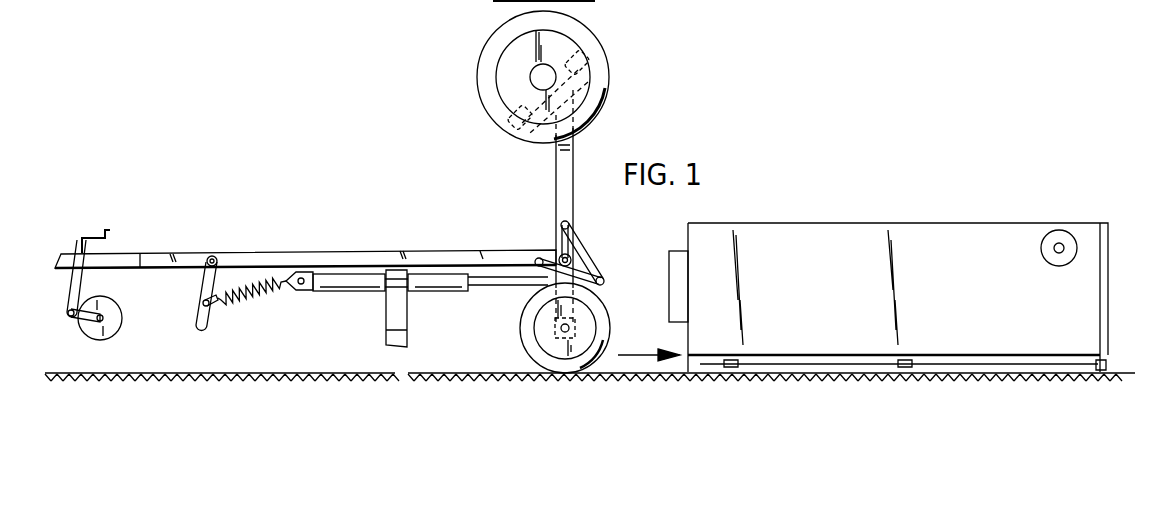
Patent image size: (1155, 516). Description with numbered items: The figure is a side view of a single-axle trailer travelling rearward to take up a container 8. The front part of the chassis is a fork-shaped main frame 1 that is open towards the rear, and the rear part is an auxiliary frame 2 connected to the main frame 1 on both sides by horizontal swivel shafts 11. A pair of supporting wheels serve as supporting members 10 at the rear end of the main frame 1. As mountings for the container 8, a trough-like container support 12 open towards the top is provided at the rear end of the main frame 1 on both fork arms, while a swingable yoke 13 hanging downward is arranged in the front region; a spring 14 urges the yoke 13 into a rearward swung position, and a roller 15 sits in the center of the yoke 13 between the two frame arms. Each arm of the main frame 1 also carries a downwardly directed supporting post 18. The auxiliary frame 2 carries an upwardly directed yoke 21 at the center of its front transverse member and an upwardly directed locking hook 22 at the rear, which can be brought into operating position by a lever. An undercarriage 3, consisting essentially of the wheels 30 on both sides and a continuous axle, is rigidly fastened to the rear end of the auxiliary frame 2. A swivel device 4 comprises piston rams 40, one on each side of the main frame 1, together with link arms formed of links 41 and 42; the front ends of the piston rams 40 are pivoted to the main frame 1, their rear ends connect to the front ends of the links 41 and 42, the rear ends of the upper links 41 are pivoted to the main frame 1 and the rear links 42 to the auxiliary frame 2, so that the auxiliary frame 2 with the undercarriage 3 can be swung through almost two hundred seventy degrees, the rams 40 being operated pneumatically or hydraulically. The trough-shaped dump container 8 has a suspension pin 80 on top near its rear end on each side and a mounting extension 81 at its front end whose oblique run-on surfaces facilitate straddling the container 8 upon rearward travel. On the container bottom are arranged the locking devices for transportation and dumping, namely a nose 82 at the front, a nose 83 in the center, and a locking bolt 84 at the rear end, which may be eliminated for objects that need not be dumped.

The main frame 1 is at (315, 253).
The auxiliary frame 2 is at (575, 147).
The undercarriage 3 is at (472, 75).
The swivel device 4 is at (462, 266).
The container 8 is at (832, 232).
The supporting members 10 is at (521, 343).
The horizontal swivel shafts 11 is at (571, 255).
The container support 12 is at (560, 226).
The swingable yoke 13 is at (205, 283).
The spring 14 is at (256, 292).
The roller 15 is at (218, 310).
The supporting post 18 is at (386, 330).
The yoke 21 is at (590, 72).
The locking hook 22 is at (515, 130).
The wheels 30 is at (605, 97).
The piston rams 40 is at (345, 286).
The upper links 41 is at (538, 270).
The rear links 42 is at (591, 255).
The suspension pin 80 is at (1064, 240).
The mounting extension 81 is at (677, 251).
The nose 82 is at (731, 368).
The nose 83 is at (902, 368).
The locking bolt 84 is at (1100, 372).